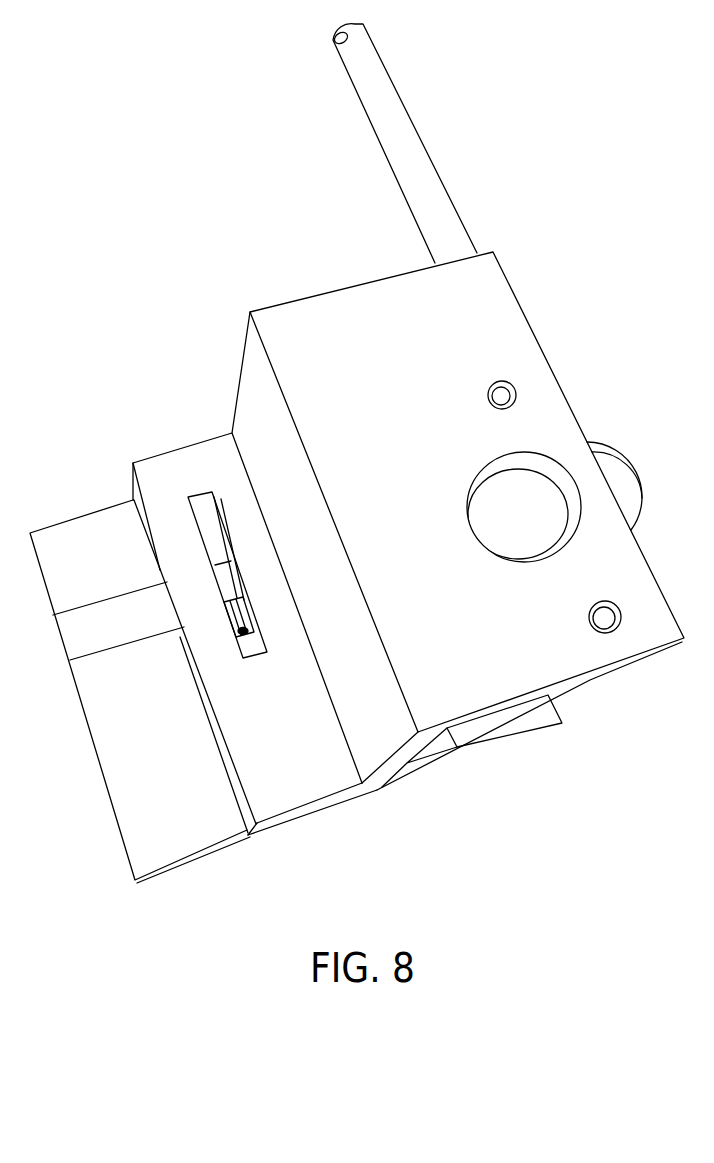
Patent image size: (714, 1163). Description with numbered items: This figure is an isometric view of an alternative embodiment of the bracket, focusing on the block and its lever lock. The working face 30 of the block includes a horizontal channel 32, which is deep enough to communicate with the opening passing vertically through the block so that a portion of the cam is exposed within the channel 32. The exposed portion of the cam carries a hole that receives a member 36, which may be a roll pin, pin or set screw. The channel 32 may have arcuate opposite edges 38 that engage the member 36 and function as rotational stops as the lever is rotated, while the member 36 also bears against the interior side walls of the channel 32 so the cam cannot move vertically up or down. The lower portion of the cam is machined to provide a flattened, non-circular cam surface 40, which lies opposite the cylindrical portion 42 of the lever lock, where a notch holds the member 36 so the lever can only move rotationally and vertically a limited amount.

The working face 30 is at (292, 728).
The horizontal channel 32 is at (257, 538).
The member 36 is at (252, 615).
The arcuate opposite edges 38 is at (202, 506).
The non-circular cam surface 40 is at (140, 691).
The cylindrical portion 42 is at (118, 657).